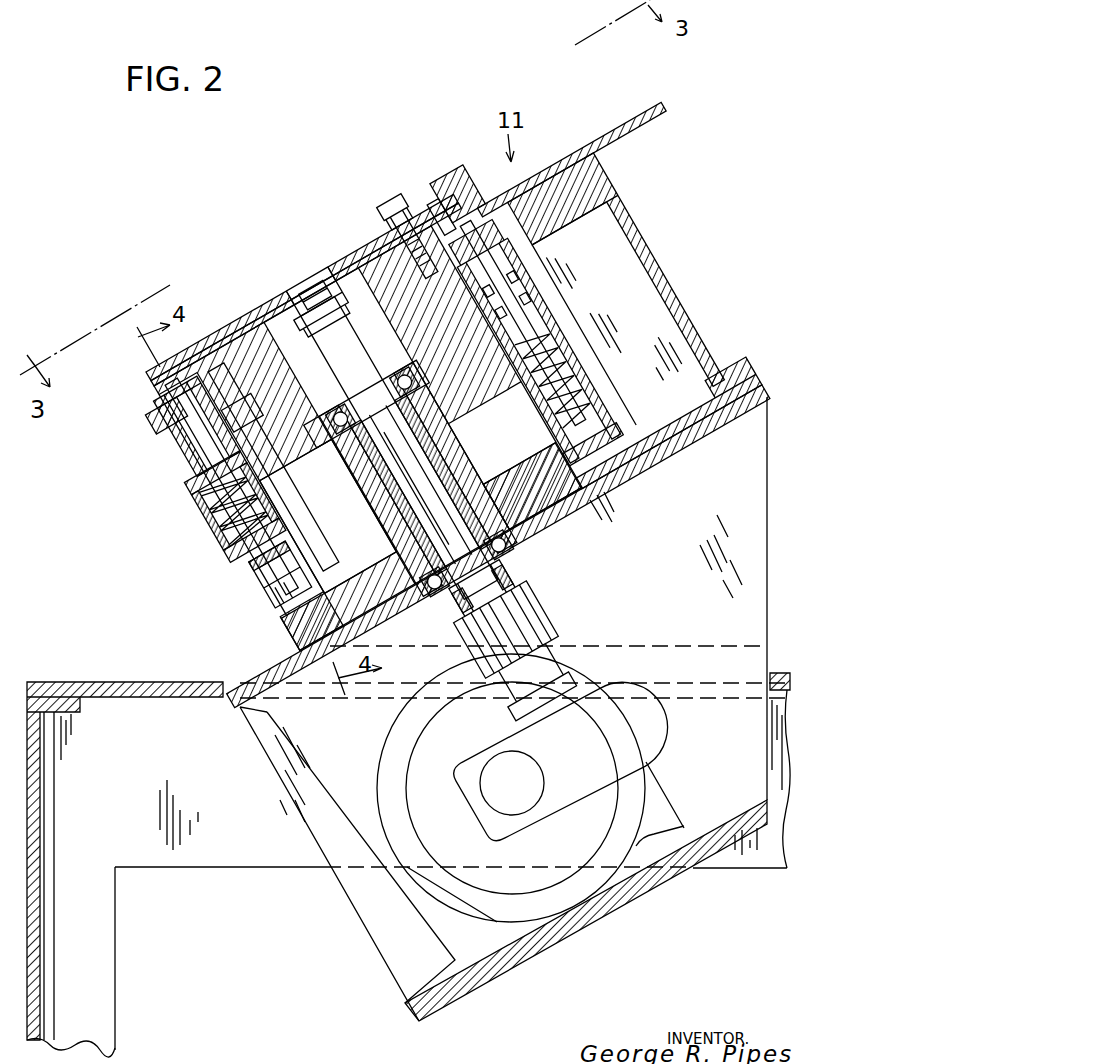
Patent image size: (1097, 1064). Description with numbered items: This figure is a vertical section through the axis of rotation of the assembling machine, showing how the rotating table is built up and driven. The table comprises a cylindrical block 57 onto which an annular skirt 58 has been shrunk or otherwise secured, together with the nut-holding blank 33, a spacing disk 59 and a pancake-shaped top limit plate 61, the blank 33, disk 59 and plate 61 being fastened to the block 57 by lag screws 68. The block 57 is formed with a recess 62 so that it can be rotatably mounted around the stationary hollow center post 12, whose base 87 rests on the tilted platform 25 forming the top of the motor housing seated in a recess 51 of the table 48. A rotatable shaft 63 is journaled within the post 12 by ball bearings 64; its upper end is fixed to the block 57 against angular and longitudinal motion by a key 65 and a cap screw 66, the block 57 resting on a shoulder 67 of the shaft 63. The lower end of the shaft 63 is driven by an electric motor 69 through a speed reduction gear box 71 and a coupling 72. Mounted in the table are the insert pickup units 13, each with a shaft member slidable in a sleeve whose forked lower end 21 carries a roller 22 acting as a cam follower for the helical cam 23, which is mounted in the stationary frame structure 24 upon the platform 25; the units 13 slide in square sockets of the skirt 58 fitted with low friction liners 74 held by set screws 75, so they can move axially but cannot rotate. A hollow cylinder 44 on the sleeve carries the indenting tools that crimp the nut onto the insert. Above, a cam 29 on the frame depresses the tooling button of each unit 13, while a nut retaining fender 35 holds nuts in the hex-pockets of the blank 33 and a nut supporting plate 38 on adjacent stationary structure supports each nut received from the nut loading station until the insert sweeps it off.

The stationary hollow center post 12 is at (468, 448).
The insert pickup unit 13 is at (176, 464).
The forked or clevis-like lower end 21 is at (272, 562).
The roller 22 is at (277, 578).
The helical cam 23 is at (290, 628).
The stationary frame structure 24 is at (677, 280).
The tilted platform 25 is at (283, 662).
The cam 29 is at (497, 215).
The nut-holding blank 33 is at (445, 225).
The nut retaining fender 35 is at (518, 195).
The nut supporting plate 38 is at (462, 230).
The hollow cylinder 44 is at (166, 425).
The table 48 is at (106, 682).
The recess 51 is at (232, 700).
The cylindrical block 57 is at (313, 483).
The annular skirt 58 is at (208, 514).
The spacing disk 59 is at (340, 252).
The top limit plate 61 is at (354, 240).
The recess 62 is at (462, 414).
The rotatable shaft 63 is at (422, 503).
The ball bearings 64 is at (443, 393).
The key 65 is at (358, 329).
The cap screw 66 is at (308, 288).
The shoulder 67 is at (352, 392).
The lag screws 68 is at (398, 196).
The electric motor 69 is at (413, 777).
The speed reduction gear box 71 is at (630, 686).
The coupling 72 is at (542, 604).
The liners 74 is at (243, 552).
The set screws 75 is at (200, 487).
The base 87 is at (520, 478).